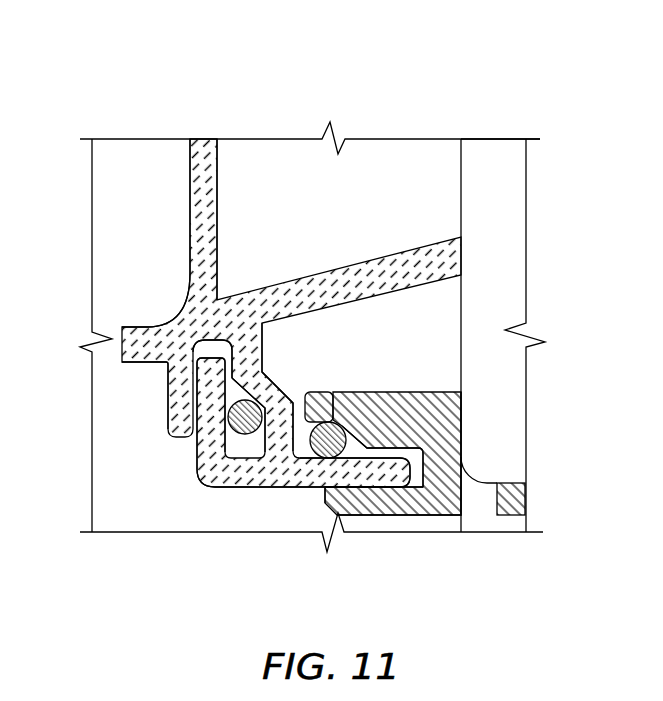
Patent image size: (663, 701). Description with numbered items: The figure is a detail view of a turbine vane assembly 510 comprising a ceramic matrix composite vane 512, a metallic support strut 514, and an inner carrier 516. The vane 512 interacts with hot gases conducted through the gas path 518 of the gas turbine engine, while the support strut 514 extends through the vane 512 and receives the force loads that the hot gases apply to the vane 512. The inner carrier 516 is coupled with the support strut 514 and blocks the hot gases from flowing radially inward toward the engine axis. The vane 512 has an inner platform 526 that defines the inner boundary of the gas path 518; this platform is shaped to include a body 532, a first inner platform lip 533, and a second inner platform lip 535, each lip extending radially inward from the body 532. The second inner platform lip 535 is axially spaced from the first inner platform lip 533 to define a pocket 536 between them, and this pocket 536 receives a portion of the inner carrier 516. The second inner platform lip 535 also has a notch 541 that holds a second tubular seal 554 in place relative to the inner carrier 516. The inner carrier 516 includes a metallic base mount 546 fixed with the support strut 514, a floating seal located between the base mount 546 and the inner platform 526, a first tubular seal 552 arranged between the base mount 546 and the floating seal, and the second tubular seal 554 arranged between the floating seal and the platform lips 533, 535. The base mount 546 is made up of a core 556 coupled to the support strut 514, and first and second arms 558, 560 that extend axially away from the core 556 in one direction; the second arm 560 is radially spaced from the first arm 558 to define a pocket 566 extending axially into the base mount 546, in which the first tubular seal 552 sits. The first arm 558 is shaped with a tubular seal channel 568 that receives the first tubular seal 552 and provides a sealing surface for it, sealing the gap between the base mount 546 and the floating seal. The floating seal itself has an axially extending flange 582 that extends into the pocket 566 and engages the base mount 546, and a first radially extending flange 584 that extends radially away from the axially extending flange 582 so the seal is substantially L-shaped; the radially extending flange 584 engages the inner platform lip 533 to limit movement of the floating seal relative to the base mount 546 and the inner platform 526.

The turbine vane assembly 510 is at (278, 247).
The ceramic matrix composite vane 512 is at (175, 196).
The metallic support strut 514 is at (498, 128).
The inner carrier 516 is at (105, 524).
The gas path 518 is at (162, 232).
The inner platform 526 is at (127, 295).
The body 532 is at (222, 285).
The first inner platform lip 533 is at (148, 376).
The second inner platform lip 535 is at (272, 335).
The pocket 536 is at (230, 328).
The notch 541 is at (289, 362).
The base mount 546 is at (488, 546).
The first tubular seal 552 is at (330, 475).
The second tubular seal 554 is at (242, 448).
The core 556 is at (448, 530).
The first arm 558 is at (423, 378).
The second arm 560 is at (392, 530).
The pocket 566 is at (440, 462).
The tubular seal channel 568 is at (334, 410).
The axially extending flange 582 is at (294, 502).
The first radially extending flange 584 is at (179, 408).